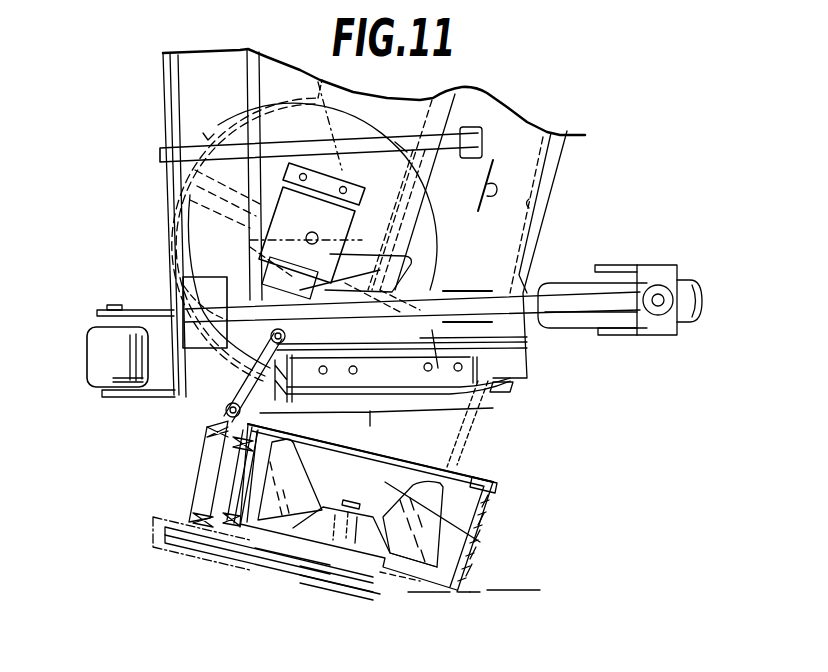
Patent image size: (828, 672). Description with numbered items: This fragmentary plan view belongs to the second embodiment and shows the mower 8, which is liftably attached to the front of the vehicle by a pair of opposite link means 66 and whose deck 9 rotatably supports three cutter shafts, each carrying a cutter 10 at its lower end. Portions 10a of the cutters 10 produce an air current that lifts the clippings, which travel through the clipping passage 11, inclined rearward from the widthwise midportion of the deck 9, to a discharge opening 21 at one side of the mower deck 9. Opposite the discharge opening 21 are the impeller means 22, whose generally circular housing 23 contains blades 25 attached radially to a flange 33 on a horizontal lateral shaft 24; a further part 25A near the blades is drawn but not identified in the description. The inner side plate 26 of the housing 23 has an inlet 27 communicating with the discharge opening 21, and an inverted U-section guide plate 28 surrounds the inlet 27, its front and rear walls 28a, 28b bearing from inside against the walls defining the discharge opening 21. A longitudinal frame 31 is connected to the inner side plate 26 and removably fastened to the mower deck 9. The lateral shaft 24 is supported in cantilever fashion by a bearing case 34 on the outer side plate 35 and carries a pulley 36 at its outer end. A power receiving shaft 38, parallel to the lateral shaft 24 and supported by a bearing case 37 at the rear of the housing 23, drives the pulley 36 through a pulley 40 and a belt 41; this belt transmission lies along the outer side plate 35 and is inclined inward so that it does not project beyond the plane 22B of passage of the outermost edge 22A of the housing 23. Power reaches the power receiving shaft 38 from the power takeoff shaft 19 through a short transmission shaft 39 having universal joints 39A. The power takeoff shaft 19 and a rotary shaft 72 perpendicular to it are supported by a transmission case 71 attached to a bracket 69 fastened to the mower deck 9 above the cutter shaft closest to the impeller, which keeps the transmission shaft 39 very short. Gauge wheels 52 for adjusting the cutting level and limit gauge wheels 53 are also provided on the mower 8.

The mower 8 is at (562, 168).
The mower deck 9 is at (176, 88).
The cutter 10 is at (240, 213).
The portions of the cutters 10a is at (198, 128).
The clipping passage 11 is at (529, 205).
The power takeoff shaft 19 is at (219, 304).
The discharge opening 21 is at (448, 413).
The impeller means 22 is at (433, 597).
The outermost edge of the housing 22A is at (458, 593).
The plane of passage of the outermost edge 22B is at (498, 592).
The housing 23 is at (473, 507).
The horizontal lateral shaft 24 is at (310, 572).
The blades 25 is at (277, 482).
The hatched wall portion 25A is at (468, 527).
The inner side plate 26 is at (490, 480).
The inlet 27 is at (410, 463).
The guide plate 28 is at (462, 462).
The front wall of the guide plate 28a is at (482, 397).
The rear wall of the guide plate 28b is at (285, 417).
The frame 31 is at (393, 340).
The flange 33 is at (272, 565).
The bearing case 34 is at (340, 585).
The outer side plate 35 is at (390, 583).
The pulley 36 is at (327, 583).
The bearing case 37 is at (193, 487).
The power receiving shaft 38 is at (227, 465).
The transmission shaft 39 is at (262, 377).
The universal joints 39A is at (226, 409).
The pulley 40 is at (193, 555).
The belt 41 is at (245, 558).
The gauge wheels 52 is at (694, 323).
The limit gauge wheels 53 is at (93, 375).
The link means 66 is at (160, 156).
The bracket 69 is at (333, 182).
The transmission case 71 is at (362, 258).
The rotary shaft 72 is at (300, 240).